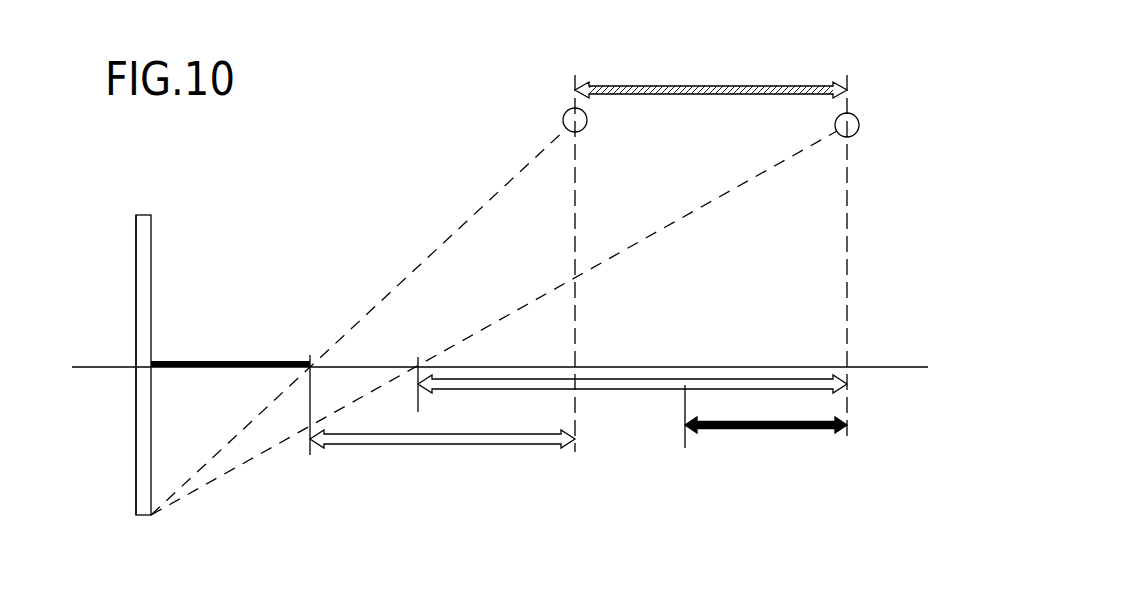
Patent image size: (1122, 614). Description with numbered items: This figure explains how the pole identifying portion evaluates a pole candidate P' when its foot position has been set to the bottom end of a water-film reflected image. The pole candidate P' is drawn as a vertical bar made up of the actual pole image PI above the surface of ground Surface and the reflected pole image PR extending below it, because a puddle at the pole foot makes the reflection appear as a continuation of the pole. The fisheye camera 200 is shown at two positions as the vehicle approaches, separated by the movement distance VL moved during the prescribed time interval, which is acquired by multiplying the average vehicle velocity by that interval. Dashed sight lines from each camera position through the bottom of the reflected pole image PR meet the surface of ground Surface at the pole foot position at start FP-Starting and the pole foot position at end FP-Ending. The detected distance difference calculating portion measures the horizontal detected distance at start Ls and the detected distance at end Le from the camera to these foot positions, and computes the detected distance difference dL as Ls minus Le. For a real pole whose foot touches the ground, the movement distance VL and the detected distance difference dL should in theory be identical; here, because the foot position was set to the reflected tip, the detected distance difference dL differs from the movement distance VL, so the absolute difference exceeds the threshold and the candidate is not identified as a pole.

The fisheye camera 200 is at (587, 124).
The pole candidate P' is at (89, 365).
The actual pole image PI is at (136, 299).
The reflected pole image PR is at (136, 430).
The movement distance VL is at (712, 85).
The detected distance at start Ls is at (637, 382).
The detected distance at end Le is at (445, 447).
The pole foot position at end FP-Ending is at (308, 350).
The pole foot position at start FP-Starting is at (417, 353).
The detected distance difference dL is at (760, 432).
The surface of ground Surface is at (874, 360).